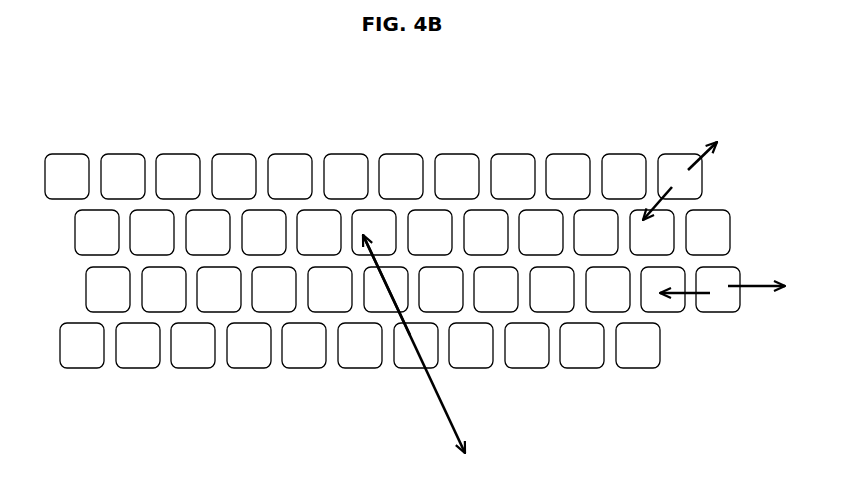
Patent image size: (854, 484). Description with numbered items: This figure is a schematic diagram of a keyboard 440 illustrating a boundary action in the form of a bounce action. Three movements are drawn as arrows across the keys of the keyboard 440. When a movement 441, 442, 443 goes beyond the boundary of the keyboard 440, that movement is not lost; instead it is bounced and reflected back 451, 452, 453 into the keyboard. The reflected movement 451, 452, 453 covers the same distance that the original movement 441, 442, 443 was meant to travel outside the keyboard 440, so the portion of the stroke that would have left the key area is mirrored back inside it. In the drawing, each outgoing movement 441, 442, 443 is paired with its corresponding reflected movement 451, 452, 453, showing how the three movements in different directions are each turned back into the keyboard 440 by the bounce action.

The keyboard 440 is at (272, 122).
The movement 441 is at (439, 392).
The reflected movement 451 is at (396, 311).
The movement 442 is at (753, 288).
The reflected movement 452 is at (683, 295).
The movement 443 is at (698, 154).
The reflected movement 453 is at (648, 210).